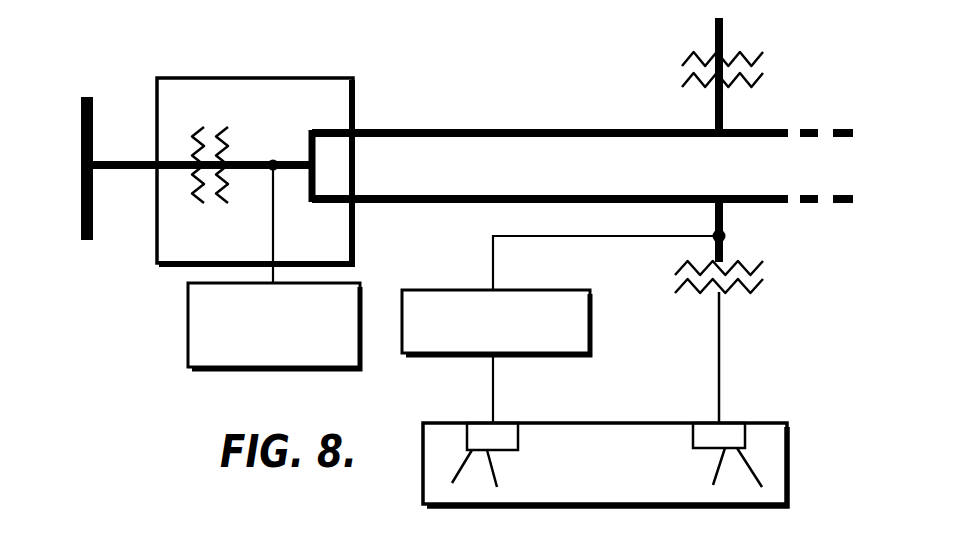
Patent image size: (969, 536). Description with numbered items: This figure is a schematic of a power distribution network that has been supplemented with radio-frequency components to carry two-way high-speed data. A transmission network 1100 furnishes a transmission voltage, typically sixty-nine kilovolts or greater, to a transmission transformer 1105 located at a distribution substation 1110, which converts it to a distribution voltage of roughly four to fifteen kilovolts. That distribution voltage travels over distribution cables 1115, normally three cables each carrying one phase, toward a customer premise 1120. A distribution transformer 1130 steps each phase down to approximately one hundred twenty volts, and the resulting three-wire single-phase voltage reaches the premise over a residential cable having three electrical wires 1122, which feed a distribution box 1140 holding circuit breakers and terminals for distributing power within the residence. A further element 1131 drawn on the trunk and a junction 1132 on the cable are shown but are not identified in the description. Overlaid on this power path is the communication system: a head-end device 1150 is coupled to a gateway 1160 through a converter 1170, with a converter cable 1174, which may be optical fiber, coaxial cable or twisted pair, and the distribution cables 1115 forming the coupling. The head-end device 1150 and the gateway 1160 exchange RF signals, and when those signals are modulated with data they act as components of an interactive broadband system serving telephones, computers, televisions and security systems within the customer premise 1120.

The transmission network 1100 is at (81, 98).
The transmission transformer 1105 is at (220, 127).
The distribution substation 1110 is at (293, 77).
The distribution cables 1115 is at (335, 130).
The customer premise 1120 is at (790, 462).
The three electrical wires 1122 is at (720, 352).
The distribution transformer 1130 is at (767, 277).
The upper tap resistor 1131 is at (701, 55).
The tap node 1132 is at (740, 236).
The distribution box 1140 is at (738, 421).
The head-end device 1150 is at (188, 323).
The gateway 1160 is at (485, 422).
The converter 1170 is at (592, 322).
The converter cable 1174 is at (493, 378).